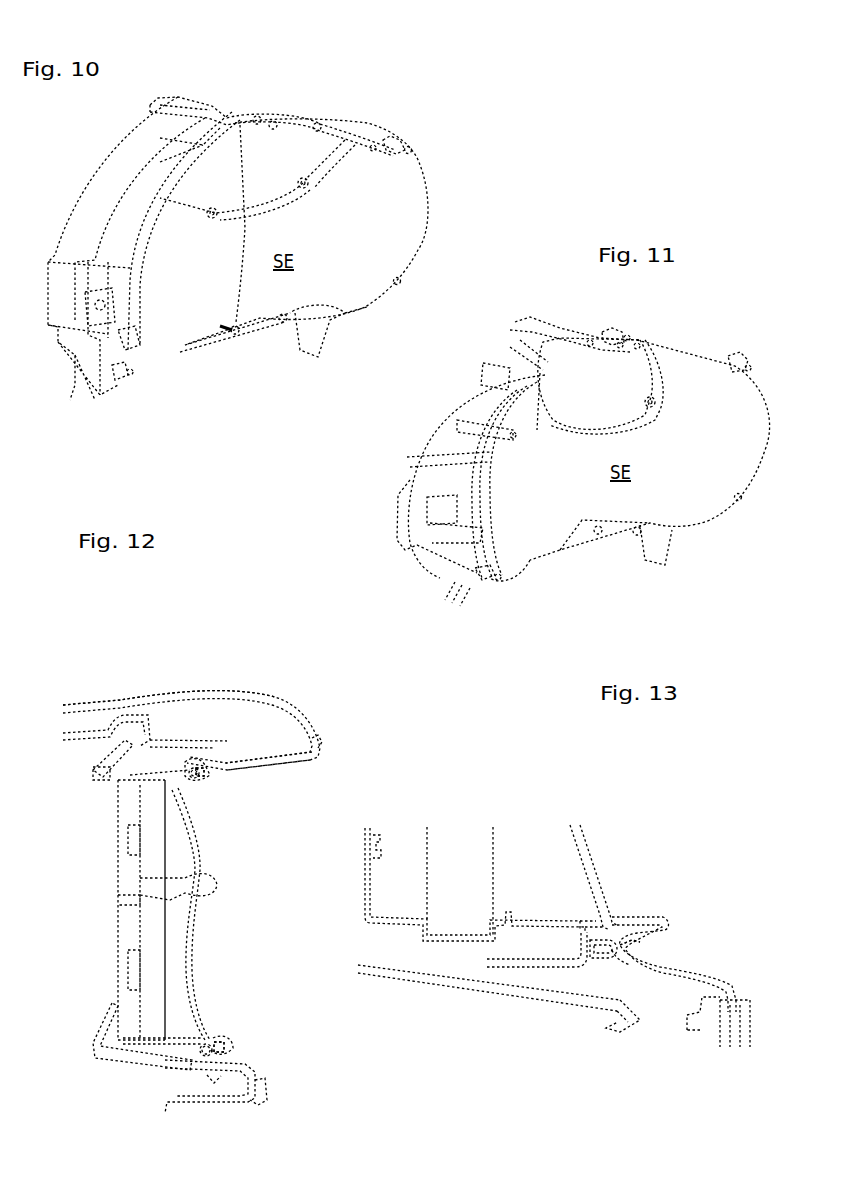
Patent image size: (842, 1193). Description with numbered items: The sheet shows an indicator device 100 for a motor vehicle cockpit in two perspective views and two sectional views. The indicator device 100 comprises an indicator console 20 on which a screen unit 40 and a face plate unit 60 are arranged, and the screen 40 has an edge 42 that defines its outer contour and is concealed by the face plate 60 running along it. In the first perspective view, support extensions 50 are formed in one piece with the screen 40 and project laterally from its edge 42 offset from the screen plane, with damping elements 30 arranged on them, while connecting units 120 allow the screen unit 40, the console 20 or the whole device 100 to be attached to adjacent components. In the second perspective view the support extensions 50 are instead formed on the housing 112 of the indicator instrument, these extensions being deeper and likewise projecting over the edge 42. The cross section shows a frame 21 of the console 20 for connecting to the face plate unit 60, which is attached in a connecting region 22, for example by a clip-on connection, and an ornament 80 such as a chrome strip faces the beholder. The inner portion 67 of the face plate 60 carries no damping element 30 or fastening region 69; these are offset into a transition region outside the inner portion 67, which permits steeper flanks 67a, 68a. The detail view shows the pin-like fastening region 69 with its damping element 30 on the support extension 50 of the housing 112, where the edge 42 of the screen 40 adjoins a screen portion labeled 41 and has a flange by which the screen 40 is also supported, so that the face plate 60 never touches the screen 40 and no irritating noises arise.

In FIG. 10, the indicator device 100 is at (358, 95).
In FIG. 11, the indicator device 100 is at (725, 320).
In FIG. 12, the indicator device 100 is at (273, 648).
In FIG. 10, the indicator console 20 is at (82, 205).
In FIG. 12, the indicator console 20 is at (98, 698).
In FIG. 12, the frame 21 is at (169, 698).
In FIG. 12, the connecting region 22 is at (322, 740).
In FIG. 10, the damping element 30 is at (412, 152).
In FIG. 11, the damping element 30 is at (628, 334).
In FIG. 12, the damping element 30 is at (199, 1061).
In FIG. 13, the damping element 30 is at (595, 964).
In FIG. 10, the screen unit 40 is at (398, 232).
In FIG. 11, the screen unit 40 is at (650, 449).
In FIG. 12, the screen unit 40 is at (198, 851).
In FIG. 13, the screen unit 40 is at (595, 858).
In FIG. 13, the lens portion 41 is at (597, 920).
In FIG. 10, the edge 42 is at (141, 242).
In FIG. 11, the edge 42 is at (767, 410).
In FIG. 12, the edge 42 is at (172, 788).
In FIG. 13, the edge 42 is at (613, 921).
In FIG. 10, the support extension 50 is at (391, 140).
In FIG. 11, the support extension 50 is at (610, 333).
In FIG. 12, the support extension 50 is at (166, 770).
In FIG. 13, the support extension 50 is at (579, 963).
In FIG. 12, the face plate unit 60 is at (286, 770).
In FIG. 13, the face plate unit 60 is at (756, 1044).
In FIG. 12, the inner portion 67 is at (207, 784).
In FIG. 13, the inner portion 67 is at (640, 924).
In FIG. 12, the steeper flank 67a is at (208, 775).
In FIG. 13, the steeper flank 67a is at (638, 946).
In FIG. 12, the steeper flank 68a is at (210, 910).
In FIG. 13, the steeper flank 68a is at (630, 942).
In FIG. 12, the fastening region 69 is at (191, 765).
In FIG. 13, the fastening region 69 is at (614, 961).
In FIG. 12, the ornament 80 is at (268, 1088).
In FIG. 11, the housing 112 is at (496, 470).
In FIG. 12, the housing 112 is at (180, 1034).
In FIG. 13, the housing 112 is at (545, 919).
In FIG. 10, the connecting unit 120 is at (215, 108).
In FIG. 11, the connecting unit 120 is at (563, 330).